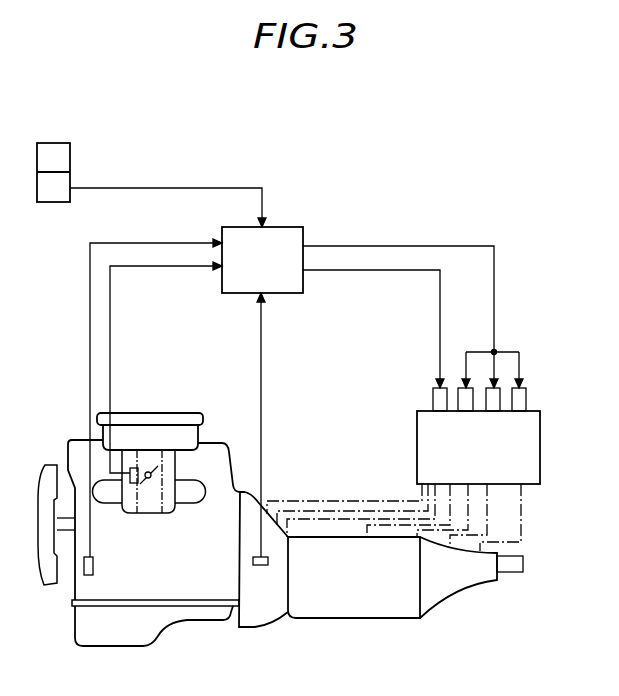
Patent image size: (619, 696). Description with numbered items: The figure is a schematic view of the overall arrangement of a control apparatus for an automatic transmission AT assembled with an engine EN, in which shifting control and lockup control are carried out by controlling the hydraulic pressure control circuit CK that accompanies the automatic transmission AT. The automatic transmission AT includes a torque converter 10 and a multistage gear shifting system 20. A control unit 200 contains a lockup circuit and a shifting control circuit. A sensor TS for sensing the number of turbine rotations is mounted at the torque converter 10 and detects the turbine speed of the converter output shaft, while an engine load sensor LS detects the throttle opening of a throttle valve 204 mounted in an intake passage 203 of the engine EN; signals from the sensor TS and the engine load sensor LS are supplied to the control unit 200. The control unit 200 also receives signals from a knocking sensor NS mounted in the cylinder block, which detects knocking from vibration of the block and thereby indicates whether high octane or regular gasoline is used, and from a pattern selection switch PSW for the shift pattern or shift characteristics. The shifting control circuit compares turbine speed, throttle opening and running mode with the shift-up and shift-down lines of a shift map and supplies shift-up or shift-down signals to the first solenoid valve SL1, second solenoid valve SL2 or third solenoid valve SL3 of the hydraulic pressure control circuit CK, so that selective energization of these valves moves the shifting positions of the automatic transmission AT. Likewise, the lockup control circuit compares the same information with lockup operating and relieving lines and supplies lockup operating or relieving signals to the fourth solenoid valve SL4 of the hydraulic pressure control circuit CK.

The pattern selection switch PSW is at (71, 163).
The control unit 200 is at (282, 278).
The first solenoid valve SL1 is at (463, 385).
The second solenoid valve SL2 is at (501, 393).
The third solenoid valve SL3 is at (527, 396).
The fourth solenoid valve SL4 is at (427, 402).
The hydraulic pressure control circuit CK is at (417, 447).
The automatic transmission AT is at (351, 624).
The multistage gear shifting system 20 is at (447, 601).
The torque converter 10 is at (270, 621).
The engine EN is at (73, 583).
The intake passage 203 is at (163, 513).
The throttle valve 204 is at (151, 474).
The engine load sensor LS is at (130, 484).
The knocking sensor NS is at (96, 567).
The sensor for sensing the number of turbine rotations TS is at (260, 566).